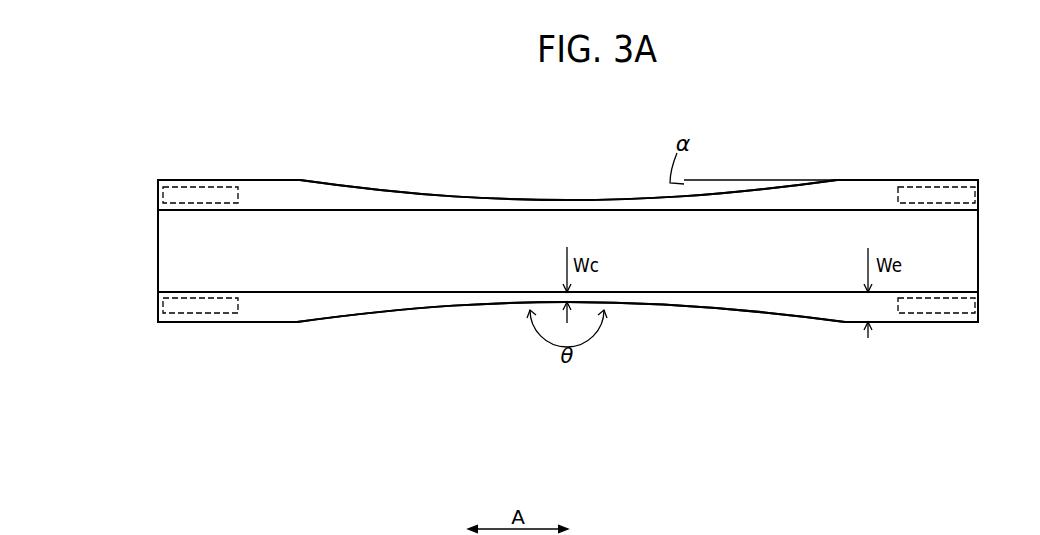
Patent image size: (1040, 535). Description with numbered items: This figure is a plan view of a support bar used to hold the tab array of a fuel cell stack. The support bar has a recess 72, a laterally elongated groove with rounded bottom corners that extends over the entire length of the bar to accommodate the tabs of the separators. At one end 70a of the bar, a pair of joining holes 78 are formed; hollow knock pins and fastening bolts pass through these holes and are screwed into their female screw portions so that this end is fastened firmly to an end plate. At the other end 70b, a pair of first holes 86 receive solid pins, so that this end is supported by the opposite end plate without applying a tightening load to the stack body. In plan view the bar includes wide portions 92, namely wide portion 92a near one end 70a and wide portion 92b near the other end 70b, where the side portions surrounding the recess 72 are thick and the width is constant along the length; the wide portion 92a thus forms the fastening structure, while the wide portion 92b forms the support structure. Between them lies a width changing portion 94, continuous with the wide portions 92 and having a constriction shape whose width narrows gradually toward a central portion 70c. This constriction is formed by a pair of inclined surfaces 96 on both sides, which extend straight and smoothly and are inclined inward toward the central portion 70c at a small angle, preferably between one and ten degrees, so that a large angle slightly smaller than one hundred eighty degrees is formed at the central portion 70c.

The one end of the support bar 70a is at (182, 180).
The other end of the support bar 70b is at (953, 180).
The central portion of the support bar 70c is at (568, 198).
The recess 72 is at (170, 229).
The joining holes 78 is at (216, 192).
The first holes 86 is at (919, 192).
The wide portions 92 is at (568, 308).
The wide portion closer to one end 92a is at (158, 368).
The wide portion closer to the other end 92b is at (978, 368).
The width changing portion 94 is at (838, 368).
The inclined surfaces 96 is at (398, 185).